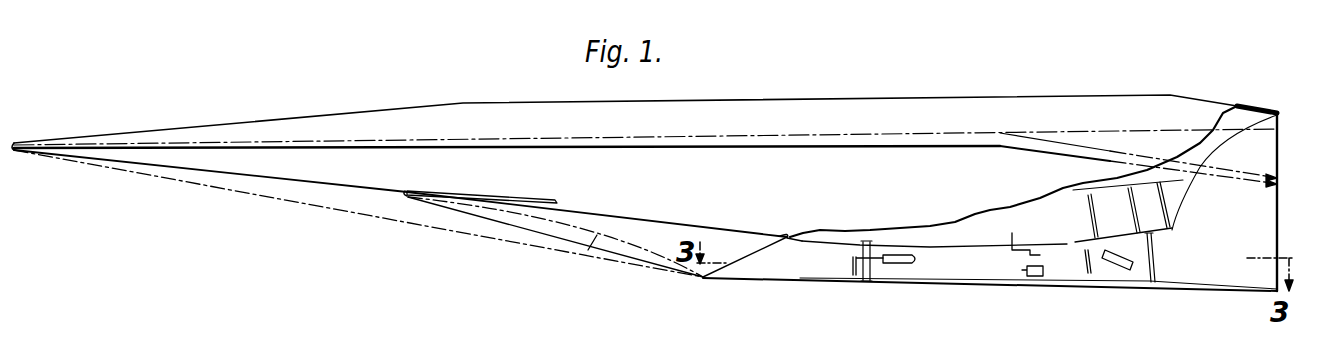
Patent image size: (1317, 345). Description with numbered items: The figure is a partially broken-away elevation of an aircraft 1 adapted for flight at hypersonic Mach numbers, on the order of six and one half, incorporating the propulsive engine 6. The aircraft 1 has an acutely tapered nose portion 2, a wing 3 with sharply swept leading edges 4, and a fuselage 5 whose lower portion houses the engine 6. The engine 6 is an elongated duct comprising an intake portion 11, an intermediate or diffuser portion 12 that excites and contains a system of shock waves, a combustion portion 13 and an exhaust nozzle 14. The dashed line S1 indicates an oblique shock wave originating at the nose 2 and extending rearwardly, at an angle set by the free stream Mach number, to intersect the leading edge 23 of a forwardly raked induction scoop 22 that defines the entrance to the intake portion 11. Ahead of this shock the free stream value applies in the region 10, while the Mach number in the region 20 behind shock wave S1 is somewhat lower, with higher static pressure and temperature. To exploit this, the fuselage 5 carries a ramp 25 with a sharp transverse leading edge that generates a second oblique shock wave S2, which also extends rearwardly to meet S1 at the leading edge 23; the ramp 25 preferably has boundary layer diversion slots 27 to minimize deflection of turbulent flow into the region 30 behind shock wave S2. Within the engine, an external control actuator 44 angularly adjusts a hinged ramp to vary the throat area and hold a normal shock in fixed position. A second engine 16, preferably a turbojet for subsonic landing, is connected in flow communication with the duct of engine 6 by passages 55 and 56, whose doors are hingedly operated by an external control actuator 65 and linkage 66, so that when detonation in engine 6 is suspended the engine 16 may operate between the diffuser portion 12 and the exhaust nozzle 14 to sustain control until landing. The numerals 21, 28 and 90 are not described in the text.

The aircraft 1 is at (243, 101).
The nose portion 2 is at (16, 152).
The wing 3 is at (537, 141).
The leading edges 4 is at (488, 141).
The fuselage 5 is at (712, 188).
The propulsive engine 6 is at (962, 286).
The free stream region 10 is at (368, 250).
The intake portion 11 is at (782, 264).
The intermediate or diffuser portion 12 is at (905, 274).
The combustion portion 13 is at (1115, 274).
The exhaust nozzle 14 is at (1215, 223).
The second engine 16 is at (1103, 196).
The flow region behind shock wave S1 20 is at (366, 205).
The tick on shock 21 is at (588, 250).
The induction scoop 22 is at (752, 257).
The leading edge of induction scoop 23 is at (701, 280).
The ramp 25 is at (409, 197).
The boundary layer diversion slots 27 is at (497, 196).
The actuator 28 is at (916, 262).
The flow region behind shock wave S2 30 is at (550, 229).
The external control actuator 44 is at (1134, 263).
The passage 55 is at (1077, 208).
The passage 56 is at (1175, 194).
The external control actuator 65 is at (1026, 268).
The linkage 66 is at (1046, 232).
The vehicle base 90 is at (1304, 225).
The oblique shock wave S1 is at (283, 200).
The second oblique shock wave S2 is at (512, 224).